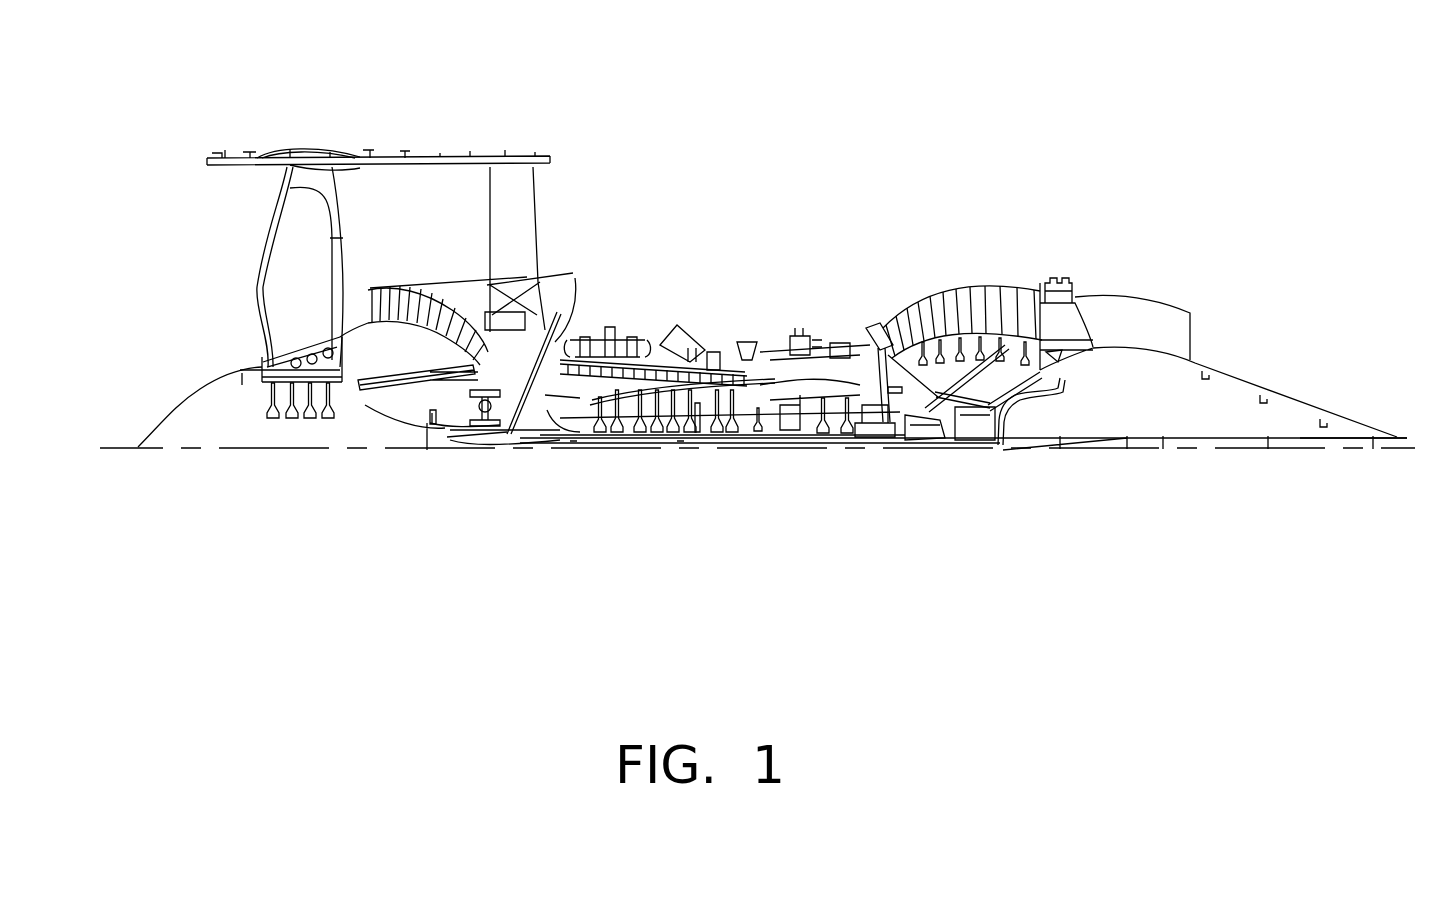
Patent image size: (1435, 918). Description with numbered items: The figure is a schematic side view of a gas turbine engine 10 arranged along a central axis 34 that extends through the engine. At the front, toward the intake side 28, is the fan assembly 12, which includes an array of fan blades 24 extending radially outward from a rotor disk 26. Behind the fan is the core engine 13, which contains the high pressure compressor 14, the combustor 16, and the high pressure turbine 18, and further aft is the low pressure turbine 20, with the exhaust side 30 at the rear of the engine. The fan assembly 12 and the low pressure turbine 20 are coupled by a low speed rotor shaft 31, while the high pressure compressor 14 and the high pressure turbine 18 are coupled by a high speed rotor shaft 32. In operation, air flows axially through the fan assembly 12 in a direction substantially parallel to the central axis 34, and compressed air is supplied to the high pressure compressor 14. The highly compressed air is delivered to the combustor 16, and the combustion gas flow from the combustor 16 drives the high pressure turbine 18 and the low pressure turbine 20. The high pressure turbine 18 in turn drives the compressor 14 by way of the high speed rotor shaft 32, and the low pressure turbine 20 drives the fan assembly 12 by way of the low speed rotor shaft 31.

The gas turbine engine 10 is at (205, 123).
The fan assembly 12 is at (305, 140).
The core engine 13 is at (620, 460).
The high pressure compressor 14 is at (655, 342).
The combustor 16 is at (772, 405).
The high pressure turbine 18 is at (825, 330).
The low pressure turbine 20 is at (940, 283).
The fan blades 24 is at (314, 295).
The rotor disk 26 is at (270, 394).
The intake side 28 is at (212, 200).
The exhaust side 30 is at (1228, 318).
The low speed rotor shaft 31 is at (917, 423).
The high speed rotor shaft 32 is at (875, 430).
The central axis 34 is at (1298, 450).